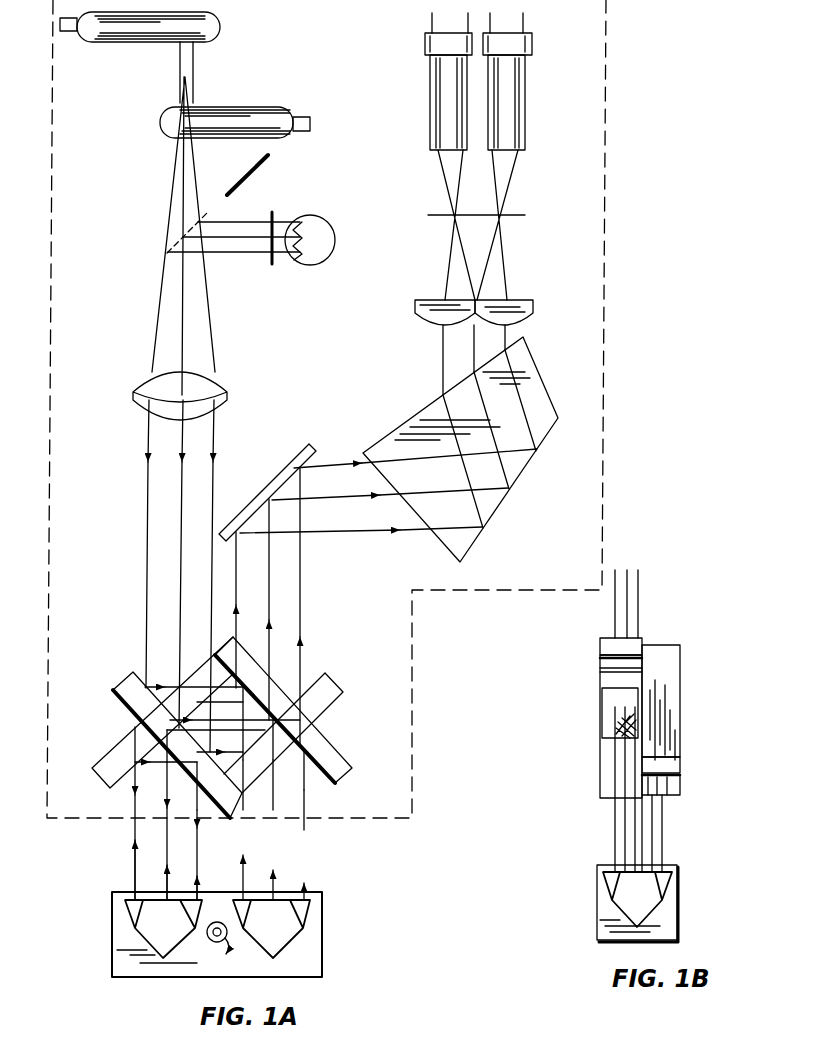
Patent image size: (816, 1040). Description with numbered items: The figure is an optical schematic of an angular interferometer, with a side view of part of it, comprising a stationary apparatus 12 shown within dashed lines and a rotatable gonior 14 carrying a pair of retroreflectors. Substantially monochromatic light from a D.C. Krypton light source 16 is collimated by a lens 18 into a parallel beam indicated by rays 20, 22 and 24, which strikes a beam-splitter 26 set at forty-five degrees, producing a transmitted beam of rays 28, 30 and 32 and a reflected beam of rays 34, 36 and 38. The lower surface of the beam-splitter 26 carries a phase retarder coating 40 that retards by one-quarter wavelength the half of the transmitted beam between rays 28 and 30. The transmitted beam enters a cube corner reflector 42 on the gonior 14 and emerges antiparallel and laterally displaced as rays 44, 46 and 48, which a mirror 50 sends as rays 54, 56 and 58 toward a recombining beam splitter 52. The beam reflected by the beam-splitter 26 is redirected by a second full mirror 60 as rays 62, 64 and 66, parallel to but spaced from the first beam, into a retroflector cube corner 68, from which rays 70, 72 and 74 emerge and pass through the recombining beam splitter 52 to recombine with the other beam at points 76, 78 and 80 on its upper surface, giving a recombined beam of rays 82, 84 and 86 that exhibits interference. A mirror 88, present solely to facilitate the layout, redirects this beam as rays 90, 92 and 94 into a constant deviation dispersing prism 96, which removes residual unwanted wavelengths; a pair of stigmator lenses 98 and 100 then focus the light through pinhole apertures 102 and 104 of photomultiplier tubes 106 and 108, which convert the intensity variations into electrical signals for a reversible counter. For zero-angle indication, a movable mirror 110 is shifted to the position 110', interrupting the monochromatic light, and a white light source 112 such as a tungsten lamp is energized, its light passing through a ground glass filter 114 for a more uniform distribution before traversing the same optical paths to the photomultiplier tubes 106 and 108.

In FIG. 1A, the stationary apparatus 12 is at (607, 311).
In FIG. 1A, the rotatable gonior 14 is at (238, 966).
In FIG. 1A, the D.C. Krypton light source 16 is at (258, 108).
In FIG. 1A, the lens 18 is at (209, 389).
In FIG. 1A, the ray 20 is at (147, 455).
In FIG. 1A, the ray 22 is at (181, 462).
In FIG. 1A, the ray 24 is at (212, 462).
In FIG. 1A, the beam-splitter 26 is at (195, 768).
In FIG. 1A, the ray 28 is at (134, 797).
In FIG. 1B, the ray 28 is at (615, 812).
In FIG. 1A, the ray 30 is at (166, 812).
In FIG. 1B, the ray 30 is at (625, 828).
In FIG. 1A, the ray 32 is at (196, 832).
In FIG. 1B, the ray 32 is at (635, 838).
In FIG. 1A, the ray 34 is at (163, 683).
In FIG. 1A, the ray 36 is at (190, 719).
In FIG. 1A, the ray 38 is at (226, 748).
In FIG. 1A, the phase retarder coating 40 is at (131, 717).
In FIG. 1B, the phase retarder coating 40 is at (627, 708).
In FIG. 1A, the cube corner reflector 42 is at (172, 932).
In FIG. 1B, the cube corner reflector 42 is at (646, 903).
In FIG. 1A, the ray 44 is at (133, 842).
In FIG. 1B, the ray 44 is at (645, 822).
In FIG. 1A, the ray 46 is at (165, 866).
In FIG. 1B, the ray 46 is at (653, 838).
In FIG. 1A, the ray 48 is at (196, 879).
In FIG. 1B, the ray 48 is at (664, 846).
In FIG. 1A, the mirror 50 is at (122, 780).
In FIG. 1B, the mirror 50 is at (671, 773).
In FIG. 1A, the recombining beam splitter 52 is at (340, 693).
In FIG. 1B, the recombining beam splitter 52 is at (680, 788).
In FIG. 1A, the ray 54 is at (166, 771).
In FIG. 1A, the ray 56 is at (197, 730).
In FIG. 1A, the ray 58 is at (220, 699).
In FIG. 1A, the second full mirror 60 is at (347, 776).
In FIG. 1B, the second full mirror 60 is at (628, 655).
In FIG. 1A, the ray 62 is at (242, 712).
In FIG. 1A, the ray 64 is at (316, 742).
In FIG. 1A, the ray 66 is at (305, 778).
In FIG. 1A, the retroflector cube corner 68 is at (282, 934).
In FIG. 1A, the ray 70 is at (242, 858).
In FIG. 1A, the ray 72 is at (272, 871).
In FIG. 1A, the ray 74 is at (303, 884).
In FIG. 1A, the recombination point 76 is at (232, 770).
In FIG. 1A, the recombination point 78 is at (270, 740).
In FIG. 1A, the recombination point 80 is at (317, 766).
In FIG. 1A, the ray 82 is at (239, 611).
In FIG. 1A, the ray 84 is at (271, 626).
In FIG. 1A, the ray 86 is at (302, 642).
In FIG. 1A, the mirror 88 is at (290, 478).
In FIG. 1A, the ray 90 is at (404, 533).
In FIG. 1A, the ray 92 is at (382, 499).
In FIG. 1A, the ray 94 is at (358, 466).
In FIG. 1A, the constant deviation dispersing prism 96 is at (438, 454).
In FIG. 1A, the stigmator lens 98 is at (433, 300).
In FIG. 1A, the stigmator lens 100 is at (508, 302).
In FIG. 1A, the pinhole aperture 102 is at (455, 215).
In FIG. 1A, the pinhole aperture 104 is at (504, 215).
In FIG. 1A, the photomultiplier tube 106 is at (432, 75).
In FIG. 1A, the photomultiplier tube 108 is at (525, 70).
In FIG. 1A, the movable mirror 110 is at (259, 175).
In FIG. 1A, the mirror position 110' is at (163, 235).
In FIG. 1A, the light source 112 is at (324, 250).
In FIG. 1A, the ground glass filter 114 is at (273, 215).